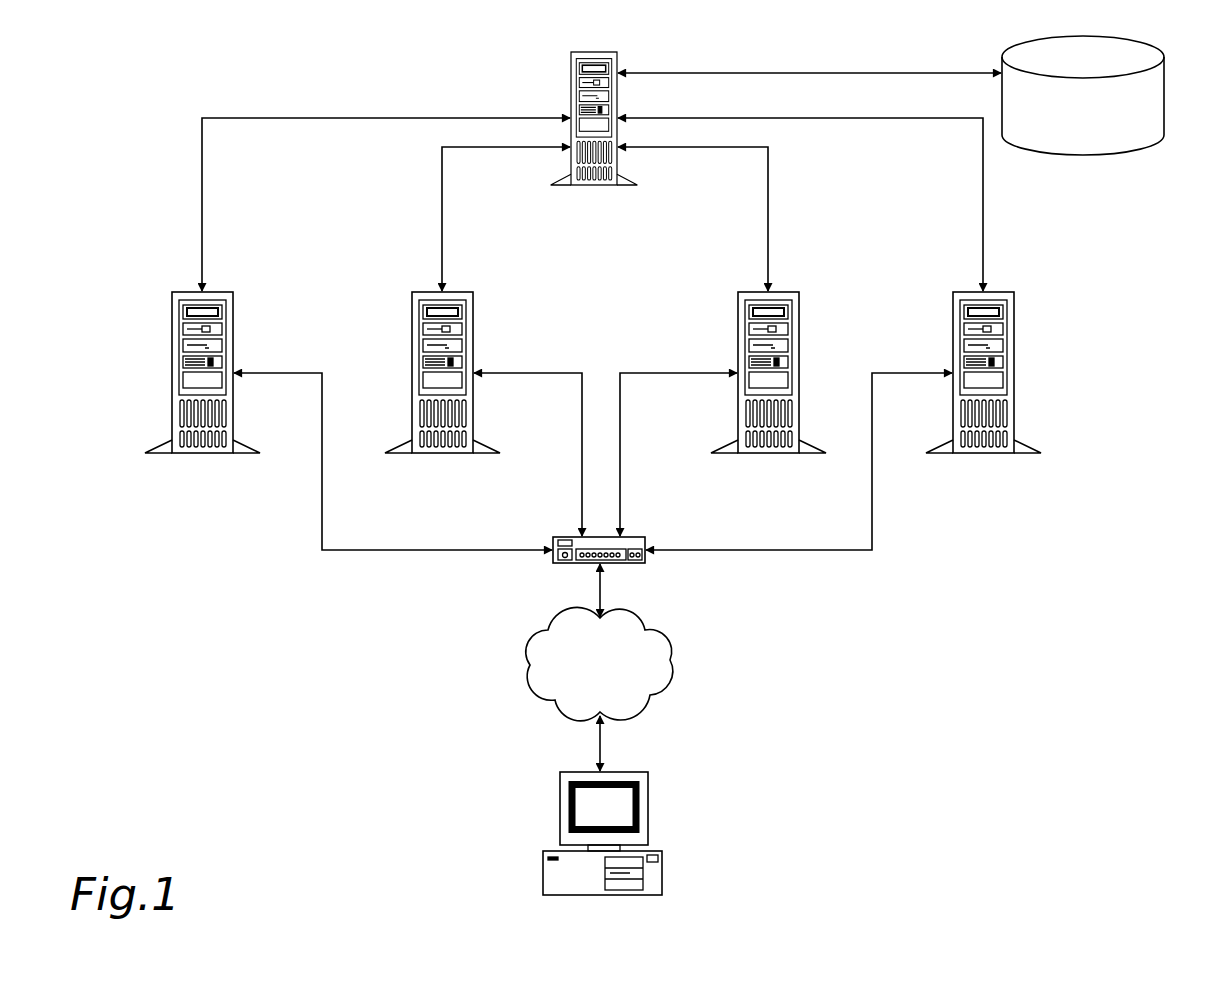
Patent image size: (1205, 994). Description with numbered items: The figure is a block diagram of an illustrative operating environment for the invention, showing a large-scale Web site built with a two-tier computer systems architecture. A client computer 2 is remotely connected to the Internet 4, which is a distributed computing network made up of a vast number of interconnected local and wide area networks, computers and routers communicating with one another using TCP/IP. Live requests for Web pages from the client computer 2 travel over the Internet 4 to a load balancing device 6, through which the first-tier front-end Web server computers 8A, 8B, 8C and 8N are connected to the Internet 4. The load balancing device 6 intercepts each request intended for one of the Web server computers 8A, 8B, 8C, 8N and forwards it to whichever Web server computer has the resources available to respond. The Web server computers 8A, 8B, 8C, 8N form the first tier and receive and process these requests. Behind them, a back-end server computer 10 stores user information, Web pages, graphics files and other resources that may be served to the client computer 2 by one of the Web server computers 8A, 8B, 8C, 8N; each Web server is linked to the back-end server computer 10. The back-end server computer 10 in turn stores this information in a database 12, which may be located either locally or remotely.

The client computer 2 is at (657, 877).
The Internet 4 is at (535, 680).
The load balancing device 6 is at (643, 563).
The Web server computer 8A is at (183, 450).
The Web server computer 8B is at (423, 450).
The Web server computer 8C is at (749, 450).
The Web server computer 8N is at (964, 450).
The back-end server computer 10 is at (578, 183).
The database 12 is at (1120, 148).